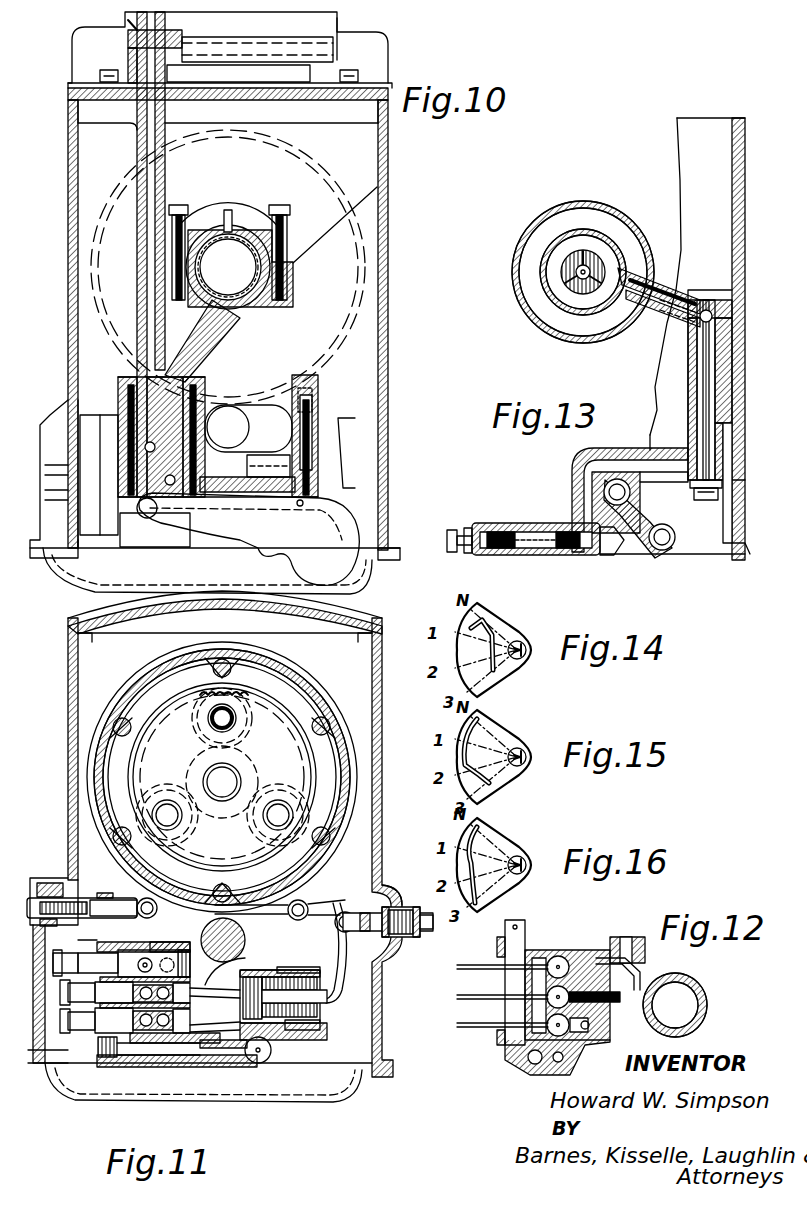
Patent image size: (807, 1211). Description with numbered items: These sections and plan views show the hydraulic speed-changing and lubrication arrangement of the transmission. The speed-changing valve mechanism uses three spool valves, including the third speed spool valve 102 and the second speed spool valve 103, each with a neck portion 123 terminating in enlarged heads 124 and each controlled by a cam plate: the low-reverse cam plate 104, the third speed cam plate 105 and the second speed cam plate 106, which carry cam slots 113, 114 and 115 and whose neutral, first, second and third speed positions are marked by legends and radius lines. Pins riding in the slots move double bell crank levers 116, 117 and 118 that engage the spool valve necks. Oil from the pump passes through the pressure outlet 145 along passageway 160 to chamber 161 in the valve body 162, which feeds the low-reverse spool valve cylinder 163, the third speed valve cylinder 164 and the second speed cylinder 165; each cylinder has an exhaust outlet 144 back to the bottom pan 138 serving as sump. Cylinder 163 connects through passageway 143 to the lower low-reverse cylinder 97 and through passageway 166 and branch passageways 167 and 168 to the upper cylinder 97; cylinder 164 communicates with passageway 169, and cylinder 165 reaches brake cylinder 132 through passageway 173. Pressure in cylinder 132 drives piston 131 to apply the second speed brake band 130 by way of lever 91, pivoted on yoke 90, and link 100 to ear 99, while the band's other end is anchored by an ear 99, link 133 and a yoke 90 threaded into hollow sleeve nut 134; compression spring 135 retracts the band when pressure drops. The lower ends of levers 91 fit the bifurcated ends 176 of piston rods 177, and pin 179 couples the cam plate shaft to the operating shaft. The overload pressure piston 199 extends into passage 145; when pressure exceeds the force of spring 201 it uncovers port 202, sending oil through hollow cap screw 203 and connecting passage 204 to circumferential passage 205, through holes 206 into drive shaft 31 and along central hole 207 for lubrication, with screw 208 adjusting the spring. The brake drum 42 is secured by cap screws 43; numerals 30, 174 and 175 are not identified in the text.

In FIG. 13, the yoke ring 30 is at (540, 238).
In FIG. 13, the drive shaft 31 is at (585, 232).
In FIG. 11, the brake drum 42 is at (290, 680).
In FIG. 11, the cap screws 43 is at (312, 722).
In FIG. 11, the yoke 90 is at (100, 898).
In FIG. 11, the lever 91 is at (346, 962).
In FIG. 10, the low-reverse cylinders 97 is at (305, 28).
In FIG. 12, the low-reverse cylinders 97 is at (710, 1015).
In FIG. 11, the ear 99 is at (295, 916).
In FIG. 11, the link 100 is at (370, 895).
In FIG. 11, the spool valve 102 is at (212, 994).
In FIG. 11, the spool valve 103 is at (212, 1038).
In FIG. 14, the low-reverse valve cam plate 104 is at (516, 647).
In FIG. 15, the third speed valve cam plate 105 is at (516, 754).
In FIG. 16, the second speed cam plate 106 is at (516, 862).
In FIG. 14, the cam slot 113 is at (459, 645).
In FIG. 15, the cam slot 114 is at (455, 751).
In FIG. 16, the cam slot 115 is at (449, 865).
In FIG. 11, the double bell crank lever 116 is at (92, 940).
In FIG. 11, the double bell crank lever 117 is at (134, 963).
In FIG. 11, the double bell crank lever 118 is at (88, 1048).
In FIG. 11, the neck portion 123 is at (85, 990).
In FIG. 11, the enlarged heads 124 is at (68, 953).
In FIG. 11, the second speed brake band 130 is at (142, 690).
In FIG. 11, the piston 131 is at (265, 962).
In FIG. 11, the cylinder 132 is at (300, 967).
In FIG. 11, the link 133 is at (152, 912).
In FIG. 11, the hollow sleeve nut 134 is at (37, 890).
In FIG. 11, the compression spring 135 is at (285, 1035).
In FIG. 11, the bottom pan 138 is at (348, 1082).
In FIG. 12, the passageway 143 is at (602, 947).
In FIG. 11, the outlet 144 is at (252, 962).
In FIG. 13, the oil pressure passage 145 is at (660, 551).
In FIG. 11, the oil pressure passage 145 is at (272, 1060).
In FIG. 11, the passageway 160 is at (127, 1067).
In FIG. 11, the chamber 161 is at (138, 942).
In FIG. 11, the valve body 162 is at (170, 942).
In FIG. 11, the low-reverse spool valve cylinder 163 is at (190, 963).
In FIG. 11, the third speed valve cylinder 164 is at (125, 1020).
In FIG. 11, the second speed cylinder 165 is at (165, 1067).
In FIG. 10, the passageway 166 is at (165, 290).
In FIG. 12, the passageway 166 is at (638, 960).
In FIG. 10, the branch passageway 167 is at (128, 22).
In FIG. 10, the branch passageway 168 is at (337, 50).
In FIG. 10, the passageway 169 is at (178, 370).
In FIG. 12, the passageway 169 is at (624, 1022).
In FIG. 10, the passageway 173 is at (220, 512).
In FIG. 11, the passageway 173 is at (292, 1050).
In FIG. 12, the passageway 173 is at (585, 1045).
In FIG. 10, the pivot 174 is at (300, 508).
In FIG. 10, the post 175 is at (312, 420).
In FIG. 13, the post 175 is at (697, 388).
In FIG. 11, the bifurcated ends 176 is at (318, 992).
In FIG. 11, the piston rods 177 is at (300, 1000).
In FIG. 10, the pin 179 is at (172, 520).
In FIG. 13, the overload pressure piston 199 is at (598, 552).
In FIG. 13, the spring 201 is at (510, 556).
In FIG. 13, the port 202 is at (588, 510).
In FIG. 13, the hollow cap screw 203 is at (700, 500).
In FIG. 13, the connecting passage 204 is at (648, 328).
In FIG. 13, the circumferential passage 205 is at (565, 258).
In FIG. 13, the holes 206 is at (562, 270).
In FIG. 13, the central hole 207 is at (560, 285).
In FIG. 13, the screw 208 is at (450, 530).